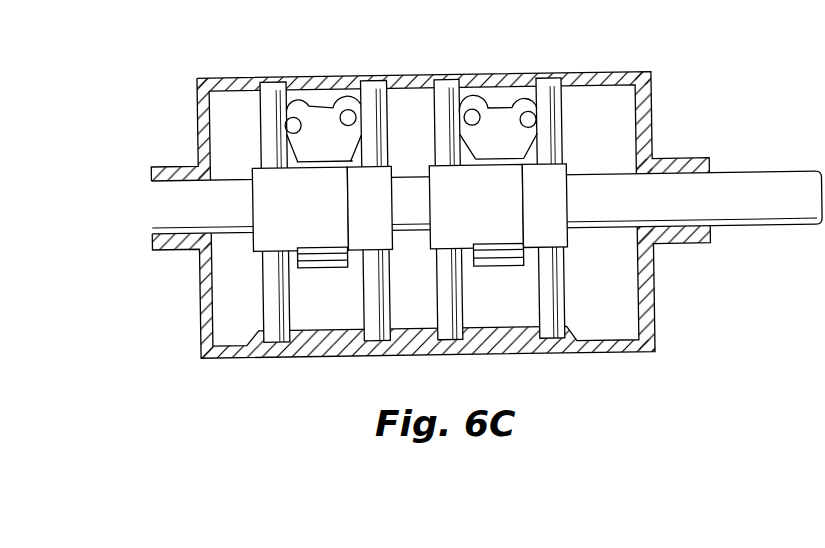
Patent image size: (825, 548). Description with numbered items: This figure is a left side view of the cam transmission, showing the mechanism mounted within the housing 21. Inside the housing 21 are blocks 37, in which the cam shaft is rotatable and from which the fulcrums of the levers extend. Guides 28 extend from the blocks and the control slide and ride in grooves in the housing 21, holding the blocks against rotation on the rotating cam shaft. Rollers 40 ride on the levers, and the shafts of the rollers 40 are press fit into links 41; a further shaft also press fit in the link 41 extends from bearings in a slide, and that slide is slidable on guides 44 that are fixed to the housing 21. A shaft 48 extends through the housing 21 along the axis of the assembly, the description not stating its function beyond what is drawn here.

The housing 21 is at (197, 93).
The guides 28 is at (267, 107).
The blocks 37 is at (558, 194).
The rollers 40 is at (292, 105).
The links 41 is at (320, 115).
The guides 44 is at (548, 118).
The shaft 48 is at (750, 180).